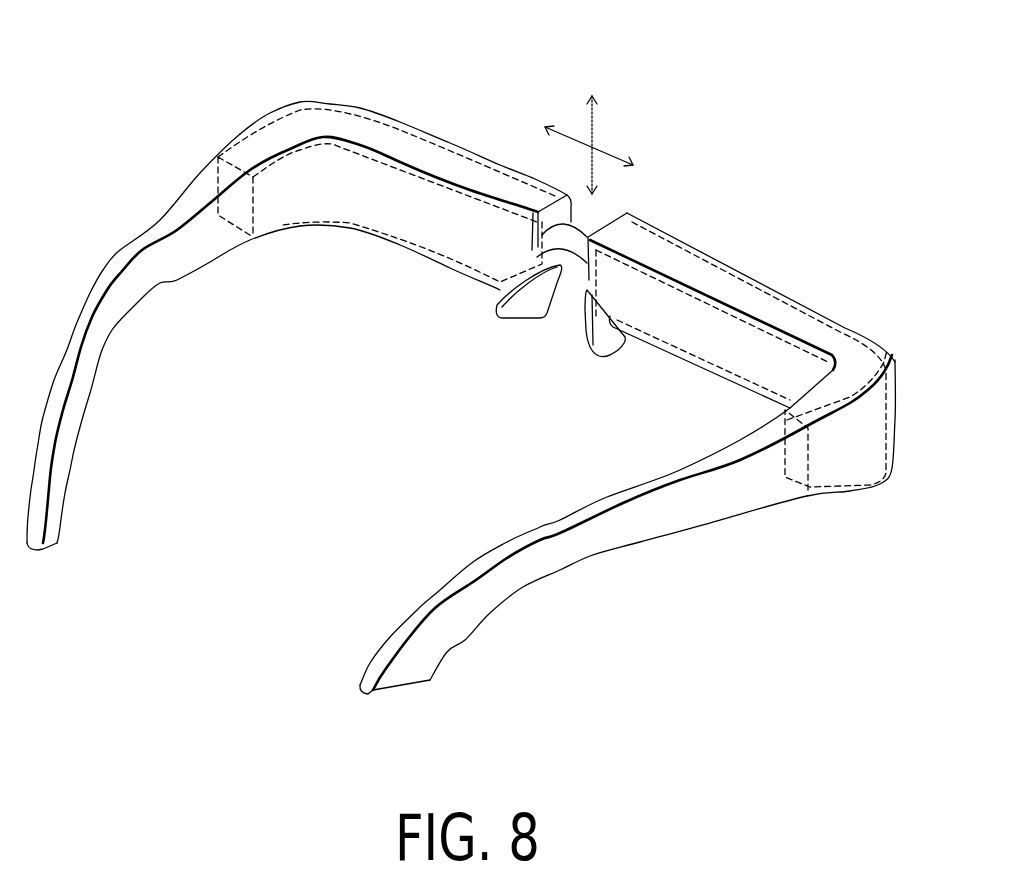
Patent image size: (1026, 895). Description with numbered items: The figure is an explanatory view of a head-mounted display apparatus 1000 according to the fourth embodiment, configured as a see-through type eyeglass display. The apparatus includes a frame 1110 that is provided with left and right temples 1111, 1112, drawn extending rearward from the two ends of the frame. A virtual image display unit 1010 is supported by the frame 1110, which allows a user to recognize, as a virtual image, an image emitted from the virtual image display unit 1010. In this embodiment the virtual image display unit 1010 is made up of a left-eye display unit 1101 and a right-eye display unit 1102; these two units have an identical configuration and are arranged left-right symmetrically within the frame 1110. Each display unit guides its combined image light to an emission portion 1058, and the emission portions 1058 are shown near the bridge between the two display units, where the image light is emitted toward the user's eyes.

The head-mounted display apparatus 1000 is at (152, 47).
The virtual image display unit 1010 is at (565, 275).
The left-eye display unit 1101 is at (422, 132).
The right-eye display unit 1102 is at (772, 280).
The emission portion 1058 is at (433, 242).
The frame 1110 is at (779, 501).
The left temple 1111 is at (159, 207).
The right temple 1112 is at (679, 519).